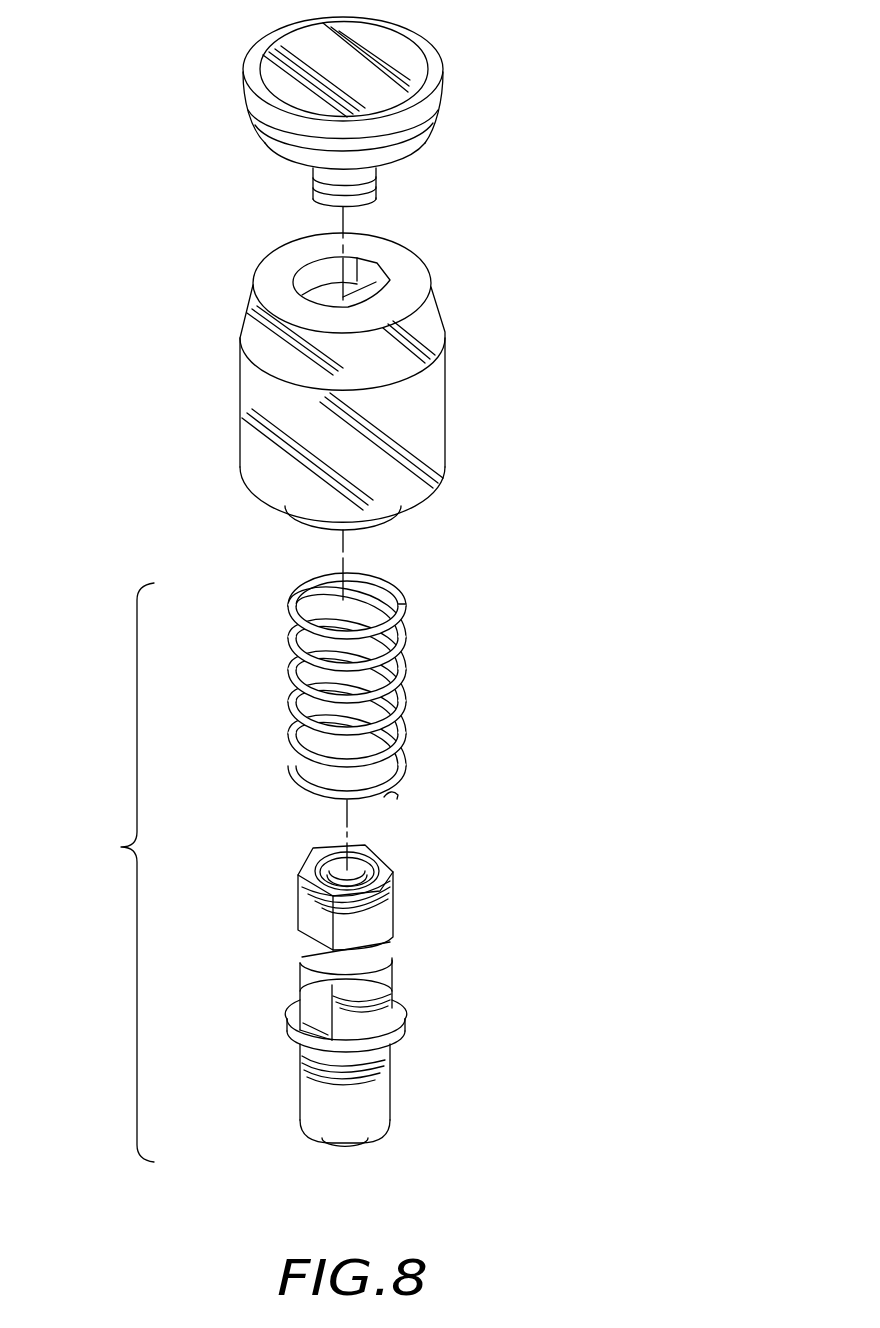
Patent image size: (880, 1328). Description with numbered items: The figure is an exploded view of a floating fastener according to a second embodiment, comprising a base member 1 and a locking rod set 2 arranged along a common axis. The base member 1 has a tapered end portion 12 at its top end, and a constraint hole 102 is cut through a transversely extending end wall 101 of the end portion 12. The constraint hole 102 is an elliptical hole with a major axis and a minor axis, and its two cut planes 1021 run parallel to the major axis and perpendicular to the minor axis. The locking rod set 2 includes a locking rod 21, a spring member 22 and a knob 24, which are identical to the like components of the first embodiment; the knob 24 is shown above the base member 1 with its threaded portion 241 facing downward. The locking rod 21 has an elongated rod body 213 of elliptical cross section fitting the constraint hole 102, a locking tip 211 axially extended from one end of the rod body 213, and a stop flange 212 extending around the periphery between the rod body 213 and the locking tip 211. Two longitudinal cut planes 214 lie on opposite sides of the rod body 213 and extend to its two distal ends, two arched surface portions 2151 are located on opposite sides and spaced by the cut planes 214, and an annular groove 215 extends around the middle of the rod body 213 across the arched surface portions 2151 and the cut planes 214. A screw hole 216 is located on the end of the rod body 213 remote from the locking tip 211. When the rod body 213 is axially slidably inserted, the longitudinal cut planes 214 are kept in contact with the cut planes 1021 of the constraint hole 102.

The base member 1 is at (361, 360).
The transversely extending end wall 101 is at (280, 293).
The constraint hole 102 is at (365, 272).
The cut planes 1021 is at (362, 292).
The tapered end portion 12 is at (242, 325).
The locking rod set 2 is at (70, 122).
The locking rod 21 is at (362, 970).
The locking tip 211 is at (315, 1085).
The stop flange 212 is at (397, 1030).
The elongated rod body 213 is at (383, 872).
The longitudinal cut planes 214 is at (385, 860).
The annular groove 215 is at (278, 977).
The arched surface portions 2151 is at (352, 956).
The screw hole 216 is at (333, 872).
The spring member 22 is at (293, 702).
The knob 24 is at (436, 87).
The threaded stud of cap 241 is at (312, 183).